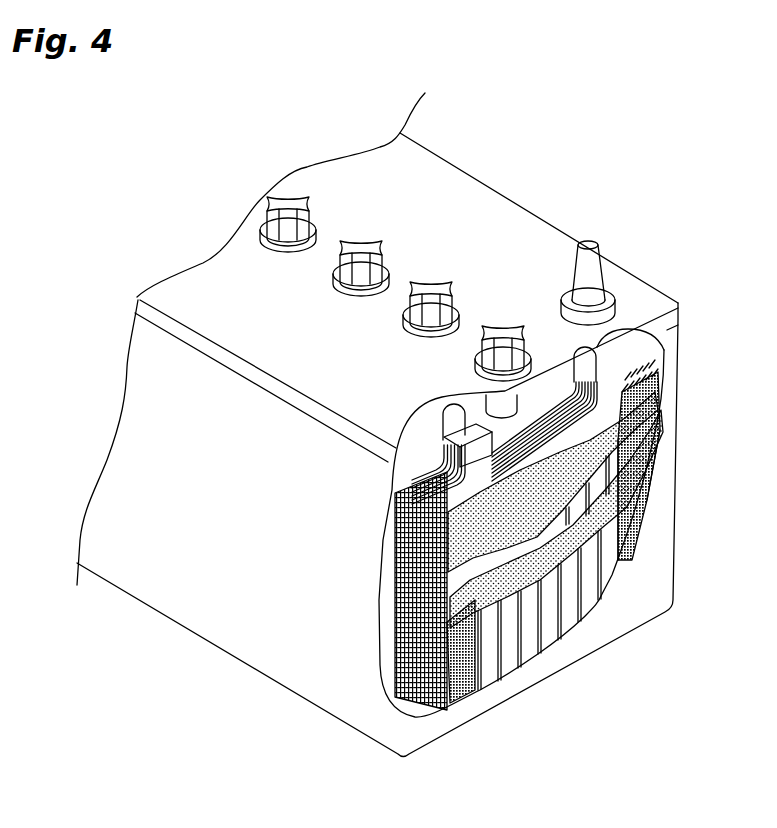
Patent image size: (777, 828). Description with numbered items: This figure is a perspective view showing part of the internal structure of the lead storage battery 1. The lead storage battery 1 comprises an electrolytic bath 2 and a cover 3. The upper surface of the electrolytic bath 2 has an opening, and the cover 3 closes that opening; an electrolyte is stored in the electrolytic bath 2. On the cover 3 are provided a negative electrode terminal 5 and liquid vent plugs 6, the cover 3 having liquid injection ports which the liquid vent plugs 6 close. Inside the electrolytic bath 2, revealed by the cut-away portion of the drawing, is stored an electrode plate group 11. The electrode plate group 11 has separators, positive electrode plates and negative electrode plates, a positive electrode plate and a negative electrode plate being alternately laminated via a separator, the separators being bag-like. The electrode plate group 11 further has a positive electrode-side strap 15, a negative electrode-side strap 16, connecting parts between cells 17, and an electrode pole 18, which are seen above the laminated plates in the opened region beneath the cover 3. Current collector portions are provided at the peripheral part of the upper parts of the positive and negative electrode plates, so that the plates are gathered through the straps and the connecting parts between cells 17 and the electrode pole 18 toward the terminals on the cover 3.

The lead storage battery 1 is at (552, 178).
The electrolytic bath 2 is at (247, 667).
The cover 3 is at (483, 190).
The negative electrode terminal 5 is at (612, 262).
The liquid vent plugs 6 is at (362, 253).
The electrode plate group 11 is at (388, 586).
The positive electrode-side strap 15 is at (433, 471).
The negative electrode-side strap 16 is at (603, 366).
The connecting parts between cells 17 is at (455, 415).
The electrode pole 18 is at (587, 361).